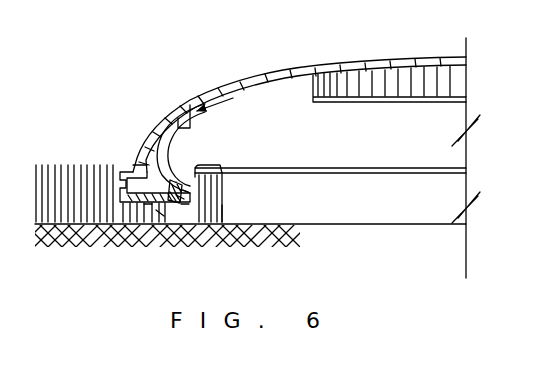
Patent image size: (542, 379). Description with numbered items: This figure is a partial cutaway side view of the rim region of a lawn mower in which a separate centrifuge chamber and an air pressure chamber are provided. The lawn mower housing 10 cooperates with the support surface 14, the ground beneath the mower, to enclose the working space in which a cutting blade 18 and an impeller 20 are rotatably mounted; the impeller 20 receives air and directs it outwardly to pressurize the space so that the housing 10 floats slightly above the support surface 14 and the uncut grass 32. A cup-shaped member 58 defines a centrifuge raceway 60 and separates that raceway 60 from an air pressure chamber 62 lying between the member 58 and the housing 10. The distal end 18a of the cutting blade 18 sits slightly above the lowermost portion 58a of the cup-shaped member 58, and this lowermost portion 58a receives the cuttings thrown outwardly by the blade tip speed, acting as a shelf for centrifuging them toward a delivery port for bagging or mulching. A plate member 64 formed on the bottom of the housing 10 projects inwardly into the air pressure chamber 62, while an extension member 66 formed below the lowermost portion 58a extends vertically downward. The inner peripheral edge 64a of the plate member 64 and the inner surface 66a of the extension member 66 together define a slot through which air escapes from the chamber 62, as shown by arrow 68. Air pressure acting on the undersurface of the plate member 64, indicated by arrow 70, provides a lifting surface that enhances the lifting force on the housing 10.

The lawn mower housing 10 is at (284, 60).
The support surface 14 is at (350, 222).
The cutting blade 18 is at (361, 146).
The distal end of cutting blade 18a is at (197, 170).
The impeller 20 is at (313, 96).
The uncut grass 32 is at (220, 212).
The cup-shaped member 58 is at (172, 130).
The lowermost portion of cup-shaped member 58a is at (165, 200).
The centrifuge raceway 60 is at (175, 157).
The air pressure chamber 62 is at (138, 150).
The plate member 64 is at (172, 192).
The inner peripheral edge of plate member 64a is at (184, 211).
The extension member 66 is at (187, 189).
The inner surface of vertical extension 66a is at (180, 198).
The arrow indicating air escapement 68 is at (160, 215).
The arrow indicating air pressure lifting force 70 is at (148, 212).